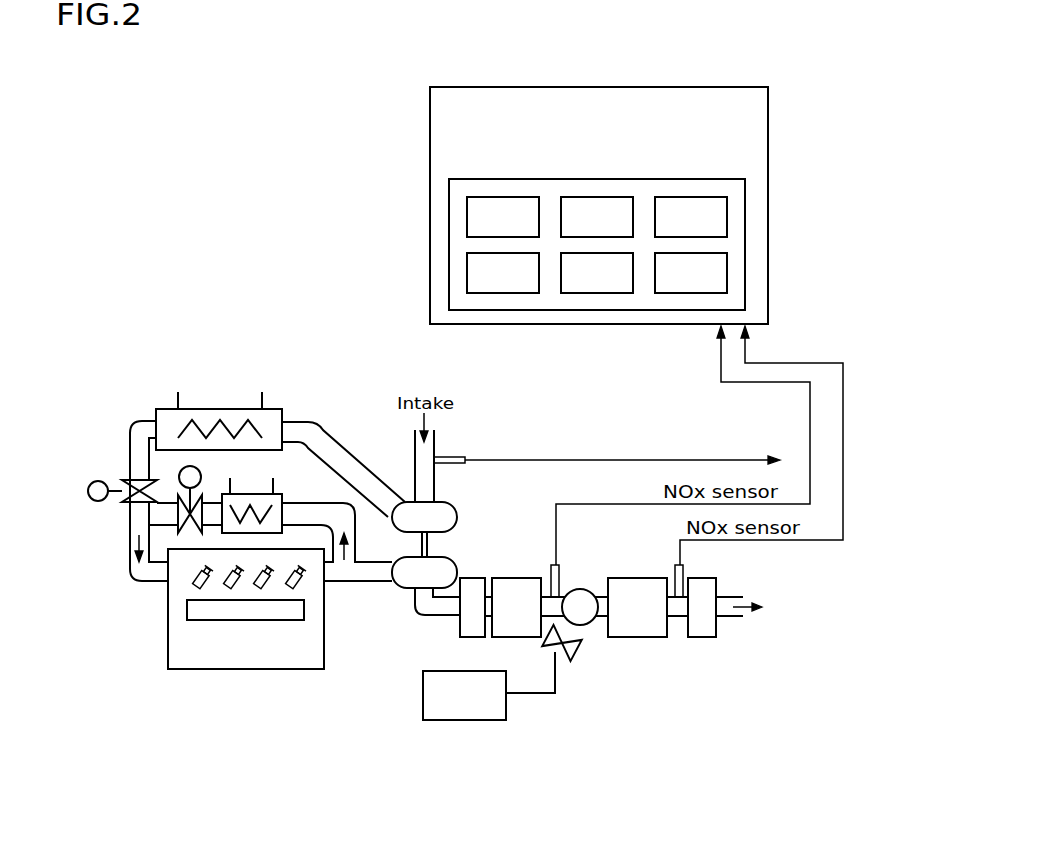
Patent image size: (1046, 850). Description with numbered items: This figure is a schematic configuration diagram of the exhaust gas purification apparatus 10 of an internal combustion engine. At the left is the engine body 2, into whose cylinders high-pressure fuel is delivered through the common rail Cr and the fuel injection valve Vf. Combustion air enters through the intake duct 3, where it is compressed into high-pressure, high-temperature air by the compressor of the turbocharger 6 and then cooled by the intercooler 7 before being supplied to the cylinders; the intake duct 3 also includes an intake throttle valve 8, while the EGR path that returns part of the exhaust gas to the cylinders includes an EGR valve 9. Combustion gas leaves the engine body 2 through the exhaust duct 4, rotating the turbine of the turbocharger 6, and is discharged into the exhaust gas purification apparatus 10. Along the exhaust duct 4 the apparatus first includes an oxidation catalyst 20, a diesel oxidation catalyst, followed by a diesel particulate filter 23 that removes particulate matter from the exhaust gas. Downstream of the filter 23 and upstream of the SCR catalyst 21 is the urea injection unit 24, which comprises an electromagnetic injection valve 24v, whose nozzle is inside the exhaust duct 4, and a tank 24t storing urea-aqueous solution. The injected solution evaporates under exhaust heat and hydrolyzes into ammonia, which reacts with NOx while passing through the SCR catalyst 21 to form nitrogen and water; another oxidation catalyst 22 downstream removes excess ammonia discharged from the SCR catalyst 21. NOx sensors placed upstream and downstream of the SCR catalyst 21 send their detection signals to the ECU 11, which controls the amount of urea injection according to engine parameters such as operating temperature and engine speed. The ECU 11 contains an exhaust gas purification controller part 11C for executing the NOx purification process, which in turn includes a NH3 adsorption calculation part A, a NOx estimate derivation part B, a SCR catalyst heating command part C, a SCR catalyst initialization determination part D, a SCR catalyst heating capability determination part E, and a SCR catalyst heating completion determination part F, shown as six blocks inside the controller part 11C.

The engine body 2 is at (218, 638).
The intake duct 3 is at (348, 448).
The exhaust duct 4 is at (413, 606).
The turbocharger 6 is at (452, 540).
The intercooler 7 is at (224, 409).
The intake throttle valve 8 is at (114, 503).
The EGR valve 9 is at (178, 476).
The exhaust gas purification apparatus 10 is at (714, 678).
The ECU 11 is at (668, 87).
The exhaust gas purification controller part 11C is at (745, 213).
The oxidation catalyst 20 is at (477, 578).
The SCR catalyst 21 is at (642, 578).
The oxidation catalyst 22 is at (717, 623).
The diesel particulate filter 23 is at (515, 578).
The urea injection unit 24 is at (490, 685).
The electromagnetic injection valve 24v is at (578, 629).
The tank 24t is at (467, 720).
The NH3 adsorption calculation part A is at (503, 197).
The NOx estimate derivation part B is at (594, 197).
The SCR catalyst heating command part C is at (689, 197).
The SCR catalyst initialization determination part D is at (503, 293).
The SCR catalyst heating capability determination part E is at (594, 293).
The SCR catalyst heating completion determination part F is at (688, 293).
The fuel injection valve Vf is at (197, 590).
The common rail Cr is at (188, 611).